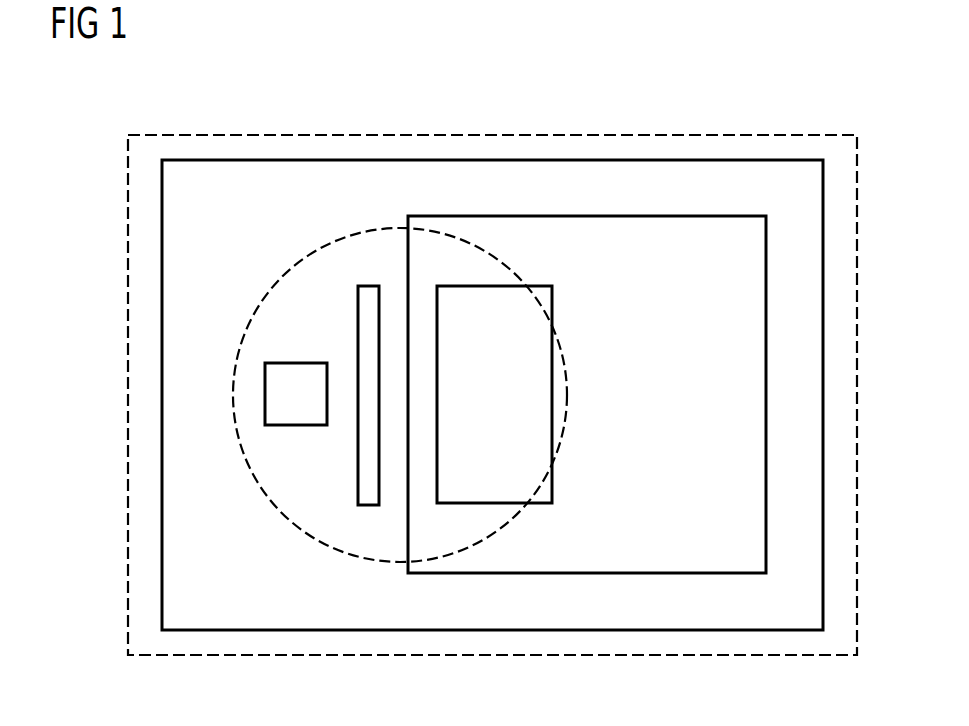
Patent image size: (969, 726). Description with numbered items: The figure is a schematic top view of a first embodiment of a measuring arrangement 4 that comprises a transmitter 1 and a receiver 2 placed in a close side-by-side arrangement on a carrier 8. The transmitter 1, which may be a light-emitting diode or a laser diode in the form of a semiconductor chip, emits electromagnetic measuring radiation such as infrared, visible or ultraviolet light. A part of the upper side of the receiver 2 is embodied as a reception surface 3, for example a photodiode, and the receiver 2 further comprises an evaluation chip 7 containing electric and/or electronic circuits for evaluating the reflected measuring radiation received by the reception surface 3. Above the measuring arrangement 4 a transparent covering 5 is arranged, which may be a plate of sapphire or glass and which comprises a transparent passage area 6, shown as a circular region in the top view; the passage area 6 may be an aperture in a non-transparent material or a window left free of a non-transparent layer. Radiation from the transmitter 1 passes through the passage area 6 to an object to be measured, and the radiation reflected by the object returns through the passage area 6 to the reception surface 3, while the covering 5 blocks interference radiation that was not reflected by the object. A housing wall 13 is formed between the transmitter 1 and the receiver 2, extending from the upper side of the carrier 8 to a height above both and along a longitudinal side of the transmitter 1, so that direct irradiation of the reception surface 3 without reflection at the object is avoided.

The transmitter 1 is at (296, 413).
The receiver 2 is at (749, 391).
The reception surface 3 is at (450, 487).
The measuring arrangement 4 is at (128, 134).
The covering 5 is at (838, 140).
The passage area 6 is at (235, 398).
The evaluation chip 7 is at (667, 410).
The carrier 8 is at (803, 487).
The housing wall 13 is at (367, 493).